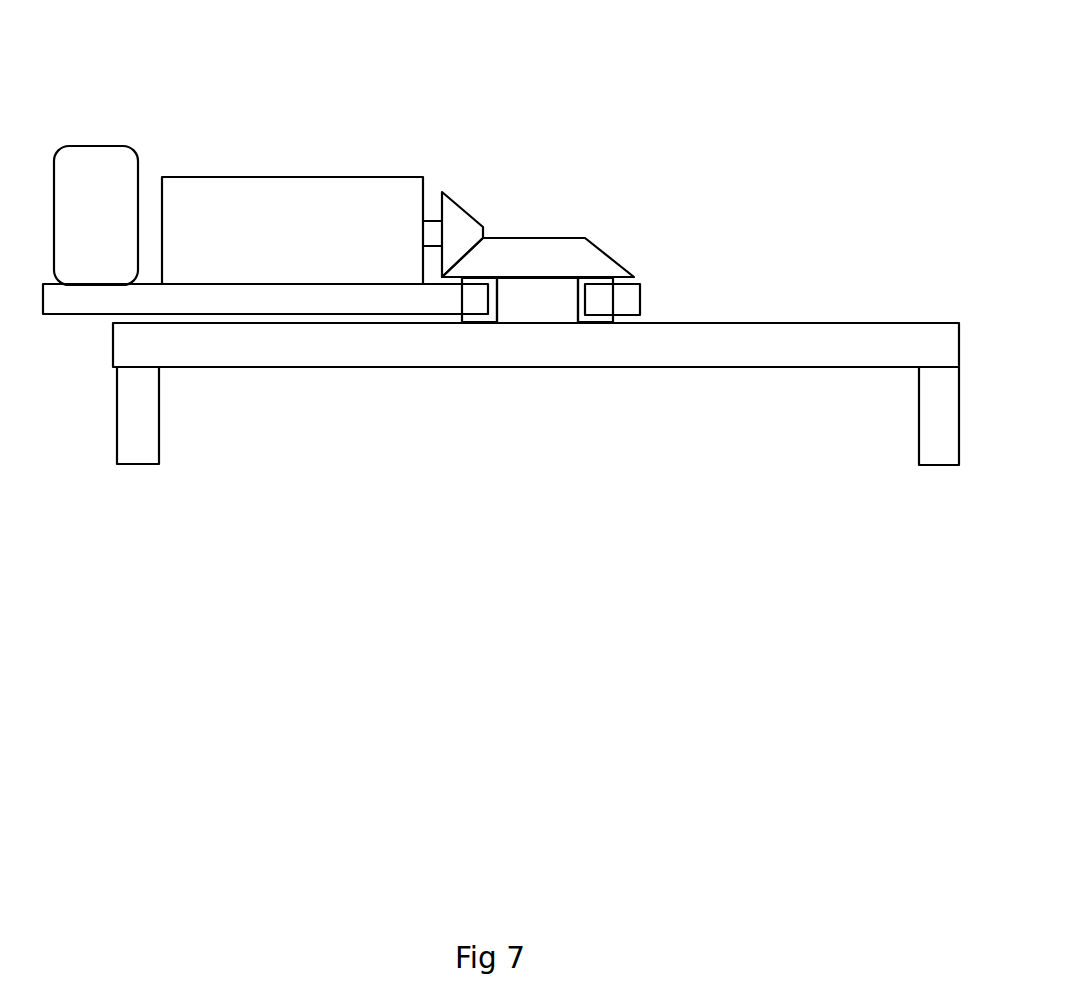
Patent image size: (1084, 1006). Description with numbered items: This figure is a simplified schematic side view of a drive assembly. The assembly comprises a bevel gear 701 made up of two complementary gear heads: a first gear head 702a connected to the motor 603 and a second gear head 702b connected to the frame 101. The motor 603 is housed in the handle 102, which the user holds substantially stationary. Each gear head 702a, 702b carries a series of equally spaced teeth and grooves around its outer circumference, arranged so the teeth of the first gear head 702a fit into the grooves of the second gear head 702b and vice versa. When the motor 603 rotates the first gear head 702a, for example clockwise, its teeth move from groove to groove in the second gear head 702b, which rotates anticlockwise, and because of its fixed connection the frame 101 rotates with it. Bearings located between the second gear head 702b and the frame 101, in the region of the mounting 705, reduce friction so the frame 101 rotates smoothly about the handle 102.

The frame 101 is at (536, 410).
The handle 102 is at (138, 156).
The motor 603 is at (292, 180).
The bevel gear 701 is at (533, 183).
The first gear head 702a is at (500, 187).
The second gear head 702b is at (543, 205).
The mounting bracket assembly 705 is at (570, 363).